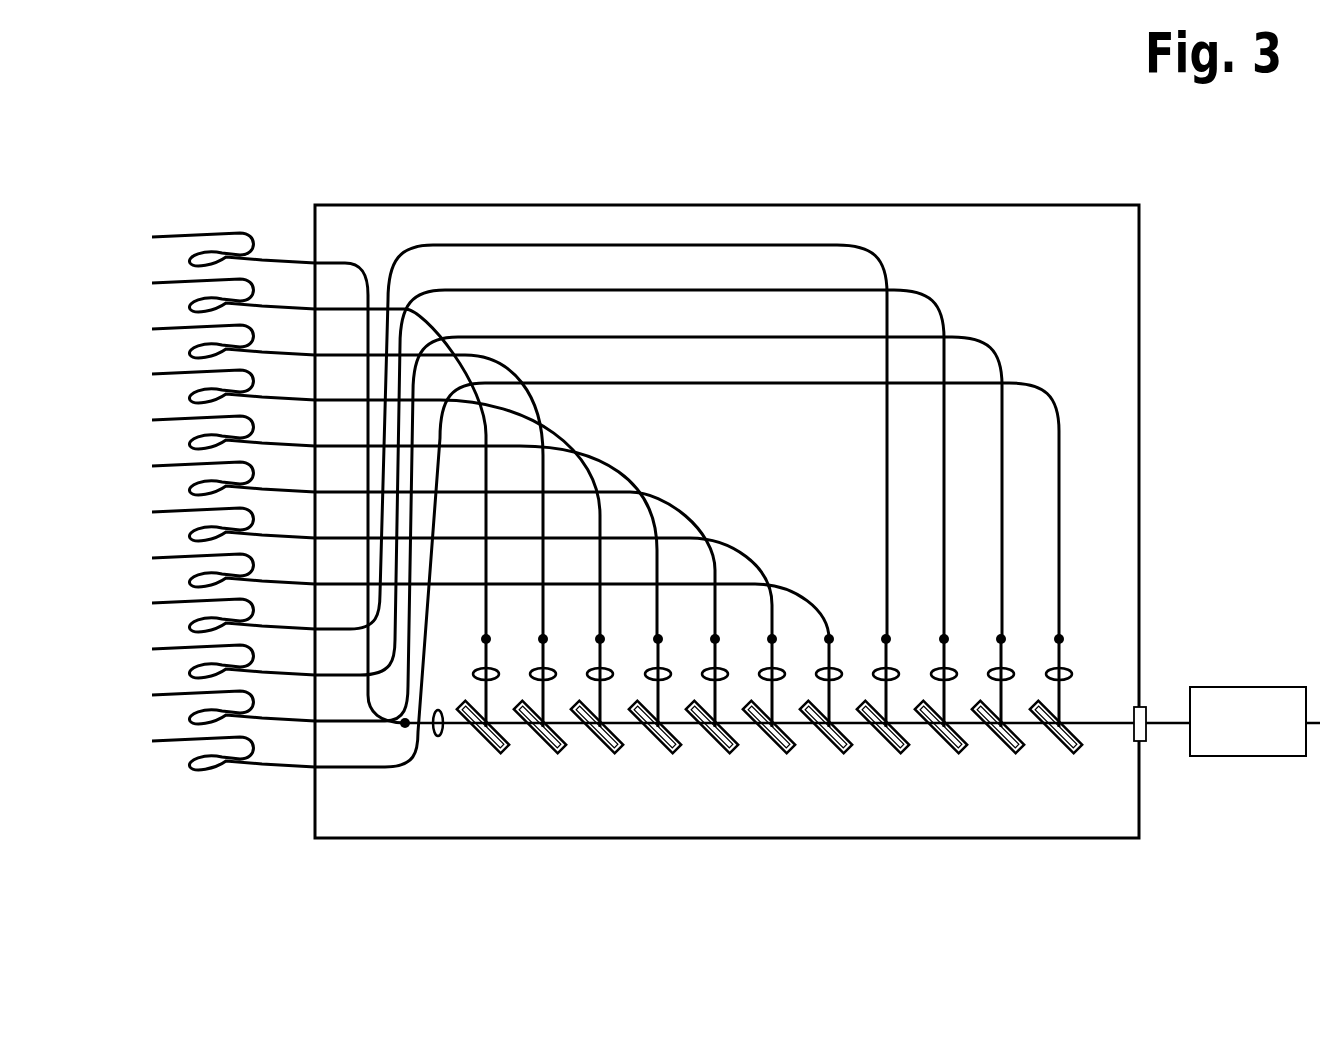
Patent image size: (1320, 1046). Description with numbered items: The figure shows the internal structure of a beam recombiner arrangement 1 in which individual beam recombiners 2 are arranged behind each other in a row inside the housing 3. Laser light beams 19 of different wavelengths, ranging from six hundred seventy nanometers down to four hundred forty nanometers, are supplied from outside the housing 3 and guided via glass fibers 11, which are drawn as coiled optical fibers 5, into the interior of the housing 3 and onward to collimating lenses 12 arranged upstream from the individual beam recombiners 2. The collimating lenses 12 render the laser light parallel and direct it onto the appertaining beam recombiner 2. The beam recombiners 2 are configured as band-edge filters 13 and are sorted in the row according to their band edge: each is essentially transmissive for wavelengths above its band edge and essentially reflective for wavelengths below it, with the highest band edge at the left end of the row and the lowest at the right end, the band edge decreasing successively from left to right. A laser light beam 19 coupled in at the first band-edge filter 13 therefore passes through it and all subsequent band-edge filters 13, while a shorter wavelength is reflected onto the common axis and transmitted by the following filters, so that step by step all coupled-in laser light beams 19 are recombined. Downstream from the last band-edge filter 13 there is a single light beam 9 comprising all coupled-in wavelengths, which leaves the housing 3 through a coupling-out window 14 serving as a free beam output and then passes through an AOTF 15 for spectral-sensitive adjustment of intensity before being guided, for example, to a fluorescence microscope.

The beam recombiner arrangement 1 is at (1180, 209).
The beam recombiner 2 is at (482, 748).
The housing 3 is at (760, 205).
The optical fiber 5 is at (1063, 466).
The light beam 9 is at (1164, 726).
The glass fiber 11 is at (195, 232).
The collimating lens 12 is at (1077, 674).
The band-edge filter 13 is at (467, 877).
The coupling-out window 14 is at (1147, 712).
The AOTF 15 is at (1255, 721).
The laser light beam 19 is at (112, 194).